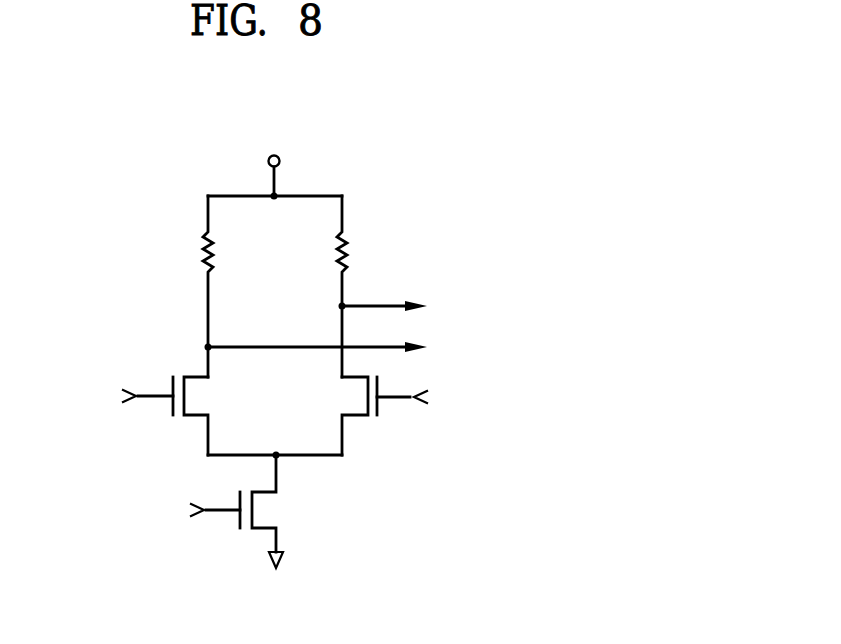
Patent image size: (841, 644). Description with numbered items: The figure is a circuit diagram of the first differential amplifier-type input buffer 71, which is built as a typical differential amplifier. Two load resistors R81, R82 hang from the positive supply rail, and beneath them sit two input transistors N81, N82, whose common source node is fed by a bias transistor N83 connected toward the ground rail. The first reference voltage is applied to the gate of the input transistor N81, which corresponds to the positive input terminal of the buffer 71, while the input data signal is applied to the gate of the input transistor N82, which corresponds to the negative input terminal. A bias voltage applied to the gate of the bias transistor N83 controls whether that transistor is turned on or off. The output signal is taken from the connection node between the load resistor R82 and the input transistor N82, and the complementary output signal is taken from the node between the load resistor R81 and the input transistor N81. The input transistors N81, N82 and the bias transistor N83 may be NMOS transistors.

The first differential amplifier-type input buffer 71 is at (486, 135).
The load resistor R81 is at (181, 286).
The load resistor R82 is at (368, 286).
The input transistor N81 is at (192, 416).
The input transistor N82 is at (356, 416).
The bias transistor N83 is at (261, 503).